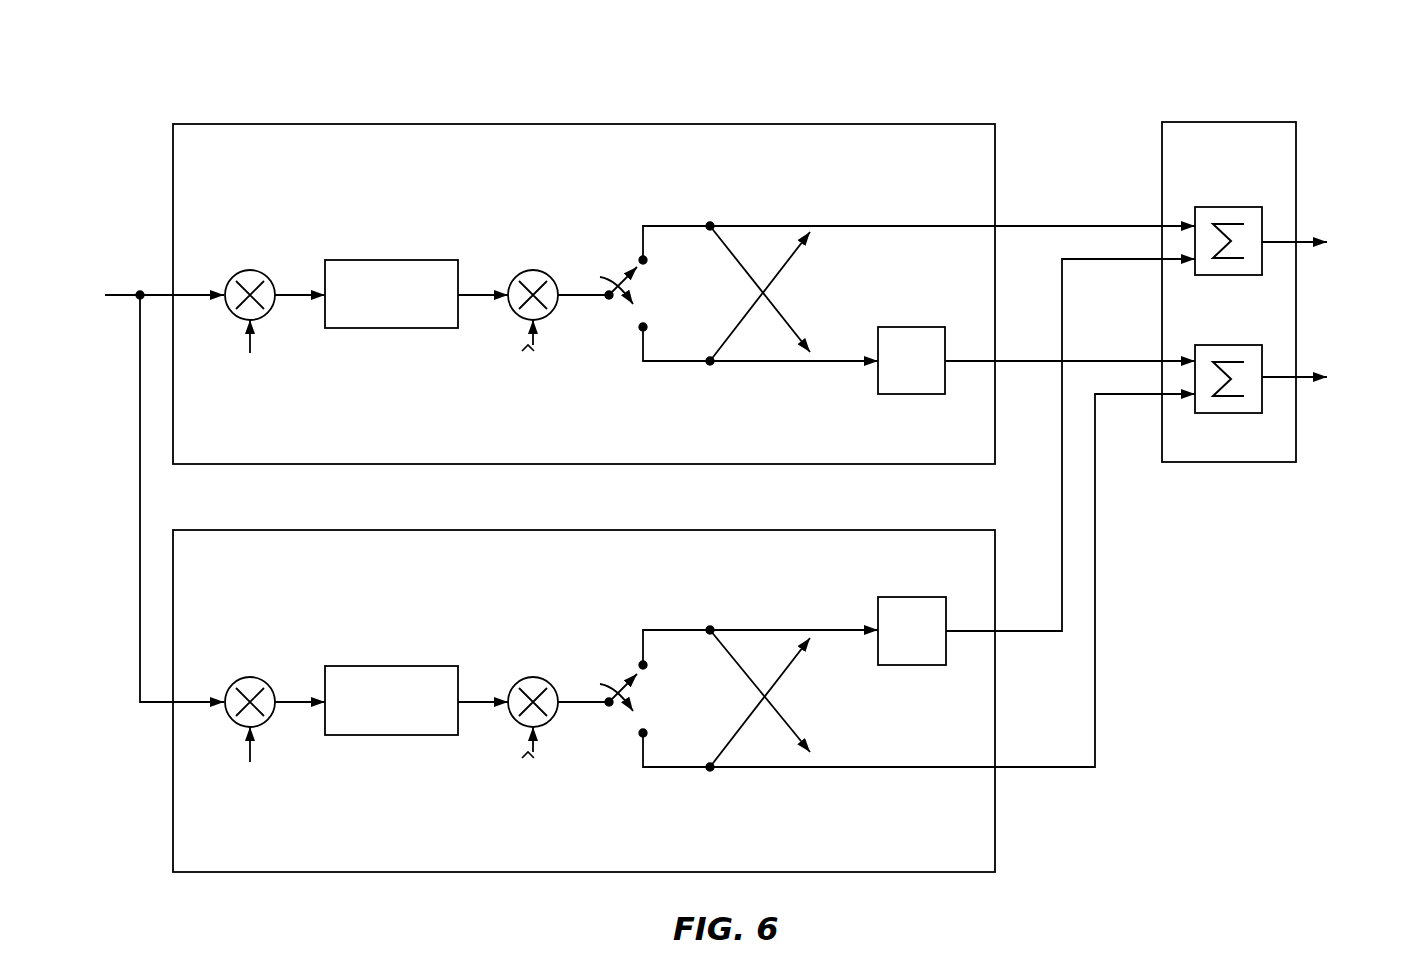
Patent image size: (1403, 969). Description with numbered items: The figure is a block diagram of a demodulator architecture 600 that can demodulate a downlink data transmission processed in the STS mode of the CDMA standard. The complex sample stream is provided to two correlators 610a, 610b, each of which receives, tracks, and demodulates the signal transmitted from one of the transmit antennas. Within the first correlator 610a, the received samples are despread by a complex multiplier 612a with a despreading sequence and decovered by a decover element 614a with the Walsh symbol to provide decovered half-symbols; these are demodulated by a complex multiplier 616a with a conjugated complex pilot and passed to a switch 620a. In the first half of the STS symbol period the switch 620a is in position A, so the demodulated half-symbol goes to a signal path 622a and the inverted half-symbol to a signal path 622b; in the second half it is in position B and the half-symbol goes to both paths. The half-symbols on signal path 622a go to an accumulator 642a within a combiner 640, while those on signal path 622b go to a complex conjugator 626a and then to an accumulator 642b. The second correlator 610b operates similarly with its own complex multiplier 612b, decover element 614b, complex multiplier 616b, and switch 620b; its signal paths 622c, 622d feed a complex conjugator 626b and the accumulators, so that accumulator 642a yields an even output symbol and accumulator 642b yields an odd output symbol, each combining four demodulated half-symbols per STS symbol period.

The demodulator architecture 600 is at (1316, 85).
The correlator 610a is at (590, 110).
The correlator 610b is at (590, 517).
The complex multiplier 612a is at (247, 270).
The complex multiplier 612b is at (247, 677).
The decover element 614a is at (396, 248).
The decover element 614b is at (387, 666).
The complex multiplier 616a is at (530, 270).
The complex multiplier 616b is at (530, 677).
The switch 620a is at (615, 284).
The switch 620b is at (615, 688).
The signal path 622a is at (669, 226).
The signal path 622b is at (679, 361).
The signal path 622c is at (669, 630).
The signal path 622d is at (679, 767).
The complex conjugator 626a is at (909, 327).
The complex conjugator 626b is at (909, 597).
The combiner 640 is at (1237, 122).
The accumulator 642a is at (1227, 207).
The accumulator 642b is at (1227, 345).